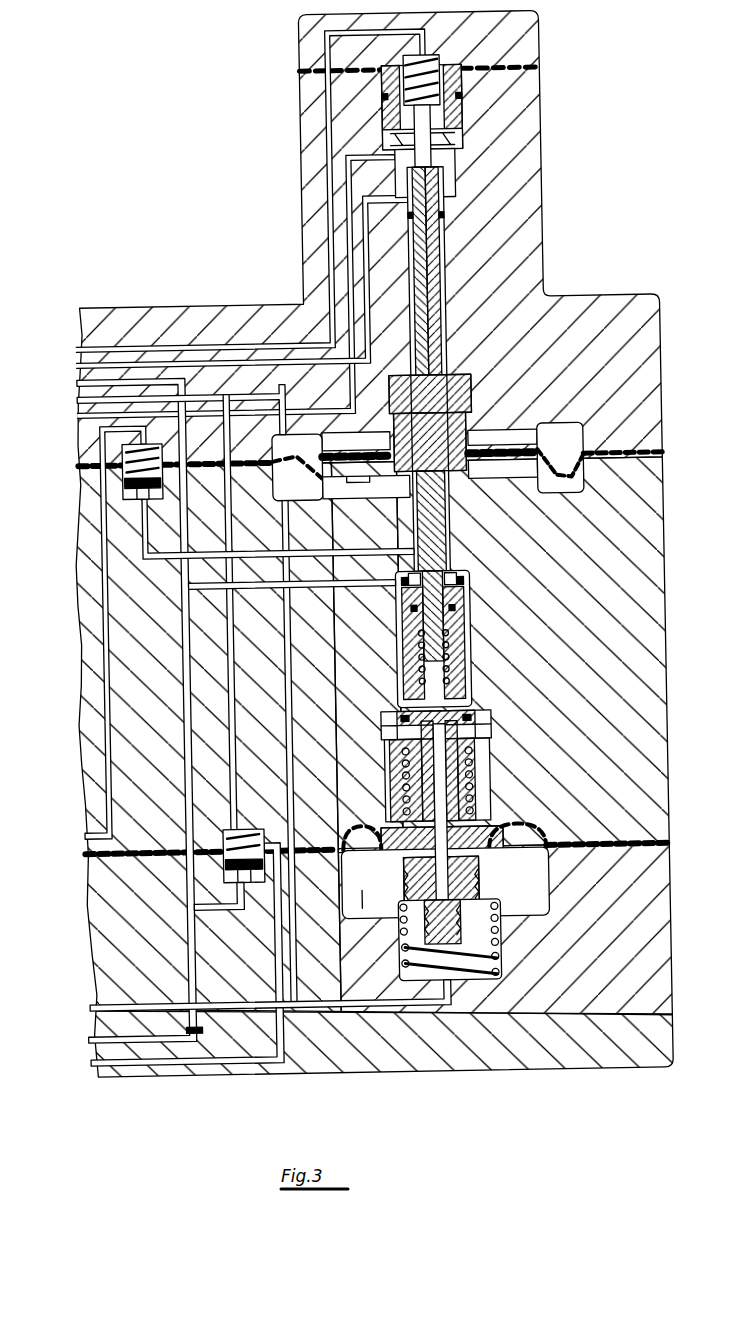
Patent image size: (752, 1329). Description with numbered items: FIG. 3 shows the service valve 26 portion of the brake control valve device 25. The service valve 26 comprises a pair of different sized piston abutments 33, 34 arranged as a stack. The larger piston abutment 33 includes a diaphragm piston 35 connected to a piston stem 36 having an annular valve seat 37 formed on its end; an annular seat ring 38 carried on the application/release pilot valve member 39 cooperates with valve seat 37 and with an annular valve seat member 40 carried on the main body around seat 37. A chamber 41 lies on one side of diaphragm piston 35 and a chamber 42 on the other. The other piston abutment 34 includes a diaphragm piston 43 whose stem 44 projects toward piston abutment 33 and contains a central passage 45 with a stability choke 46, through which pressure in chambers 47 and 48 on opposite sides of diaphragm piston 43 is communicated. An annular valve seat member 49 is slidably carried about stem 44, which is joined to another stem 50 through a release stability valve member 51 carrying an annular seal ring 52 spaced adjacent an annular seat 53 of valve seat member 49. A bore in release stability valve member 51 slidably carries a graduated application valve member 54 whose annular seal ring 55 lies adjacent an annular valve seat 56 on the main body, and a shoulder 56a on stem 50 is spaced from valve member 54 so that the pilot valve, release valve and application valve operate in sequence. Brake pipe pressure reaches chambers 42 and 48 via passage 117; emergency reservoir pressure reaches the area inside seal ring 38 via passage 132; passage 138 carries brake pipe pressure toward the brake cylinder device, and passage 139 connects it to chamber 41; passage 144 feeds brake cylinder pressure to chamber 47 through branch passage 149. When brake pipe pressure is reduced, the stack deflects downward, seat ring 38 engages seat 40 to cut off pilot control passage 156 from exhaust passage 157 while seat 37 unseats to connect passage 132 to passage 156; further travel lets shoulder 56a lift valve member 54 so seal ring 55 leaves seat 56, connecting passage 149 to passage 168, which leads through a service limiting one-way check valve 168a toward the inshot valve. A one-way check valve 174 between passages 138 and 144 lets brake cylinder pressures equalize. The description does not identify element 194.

The brake control valve device 25 is at (161, 298).
The service valve 26 is at (610, 181).
The piston abutment 33 is at (478, 422).
The piston abutment 34 is at (504, 826).
The diaphragm piston 35 is at (560, 490).
The piston stem 36 is at (448, 256).
The annular valve seat 37 is at (444, 166).
The annular seat ring 38 is at (466, 148).
The application/release pilot valve member 39 is at (466, 128).
The annular valve seat member 40 is at (404, 164).
The chamber 41 is at (276, 442).
The chamber 42 is at (368, 486).
The diaphragm piston 43 is at (543, 830).
The stem 44 is at (418, 783).
The central passage 45 is at (470, 881).
The stability choke 46 is at (476, 946).
The chamber 47 is at (376, 824).
The chamber 48 is at (357, 904).
The annular valve seat member 49 is at (490, 724).
The stem 50 is at (452, 536).
The release stability valve member 51 is at (470, 686).
The annular seal ring 52 is at (470, 714).
The annular seat 53 is at (382, 734).
The graduated application valve member 54 is at (470, 599).
The annular seal ring 55 is at (402, 594).
The annular valve seat 56 is at (410, 576).
The shoulder 56a is at (458, 574).
The passage 117 is at (291, 697).
The passage 132 is at (336, 128).
The passage 138 is at (84, 392).
The passage 139 is at (290, 386).
The passage 144 is at (84, 375).
The branch passage 149 is at (204, 588).
The pilot control passage 156 is at (371, 240).
The exhaust passage 157 is at (355, 177).
The passage 168 is at (152, 556).
The service limiting one-way check valve 168a is at (126, 486).
The one-way check valve 174 is at (236, 830).
The spring 194 is at (398, 970).